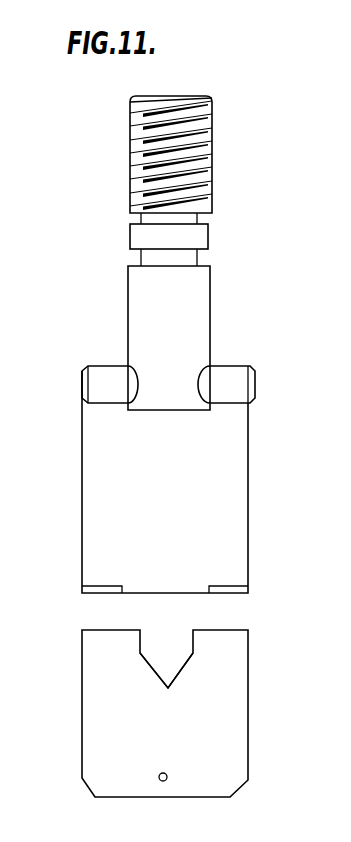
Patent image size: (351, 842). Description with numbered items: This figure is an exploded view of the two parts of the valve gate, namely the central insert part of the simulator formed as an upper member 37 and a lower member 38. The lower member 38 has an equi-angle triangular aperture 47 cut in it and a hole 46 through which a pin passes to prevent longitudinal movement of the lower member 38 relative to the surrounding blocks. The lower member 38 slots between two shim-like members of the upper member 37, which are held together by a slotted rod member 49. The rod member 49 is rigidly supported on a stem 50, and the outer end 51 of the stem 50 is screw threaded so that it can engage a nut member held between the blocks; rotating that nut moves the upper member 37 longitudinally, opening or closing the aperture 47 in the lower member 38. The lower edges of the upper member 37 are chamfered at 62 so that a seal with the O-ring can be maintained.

The outer end of the stem 51 is at (136, 153).
The stem 50 is at (203, 304).
The slotted rod member 49 is at (235, 386).
The upper member 37 is at (97, 455).
The chamfer 62 is at (92, 592).
The lower member 38 is at (97, 712).
The triangular aperture 47 is at (173, 670).
The hole 46 is at (162, 781).